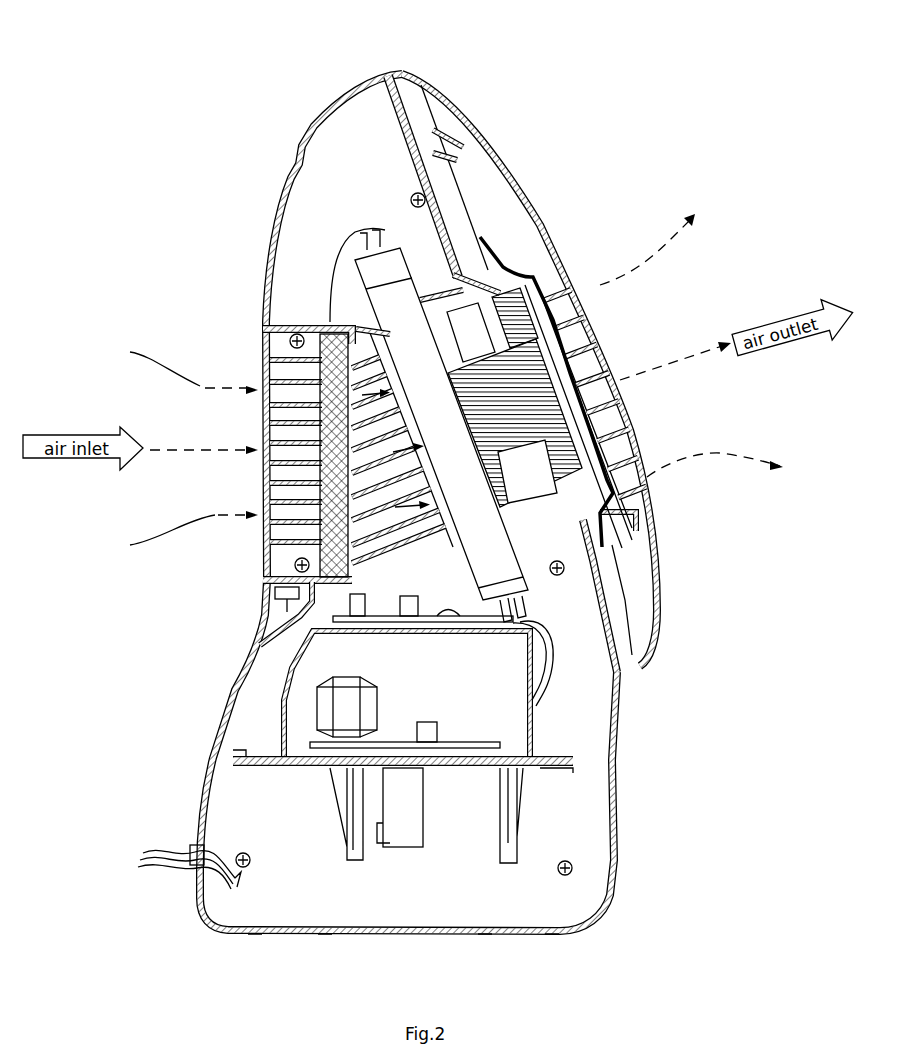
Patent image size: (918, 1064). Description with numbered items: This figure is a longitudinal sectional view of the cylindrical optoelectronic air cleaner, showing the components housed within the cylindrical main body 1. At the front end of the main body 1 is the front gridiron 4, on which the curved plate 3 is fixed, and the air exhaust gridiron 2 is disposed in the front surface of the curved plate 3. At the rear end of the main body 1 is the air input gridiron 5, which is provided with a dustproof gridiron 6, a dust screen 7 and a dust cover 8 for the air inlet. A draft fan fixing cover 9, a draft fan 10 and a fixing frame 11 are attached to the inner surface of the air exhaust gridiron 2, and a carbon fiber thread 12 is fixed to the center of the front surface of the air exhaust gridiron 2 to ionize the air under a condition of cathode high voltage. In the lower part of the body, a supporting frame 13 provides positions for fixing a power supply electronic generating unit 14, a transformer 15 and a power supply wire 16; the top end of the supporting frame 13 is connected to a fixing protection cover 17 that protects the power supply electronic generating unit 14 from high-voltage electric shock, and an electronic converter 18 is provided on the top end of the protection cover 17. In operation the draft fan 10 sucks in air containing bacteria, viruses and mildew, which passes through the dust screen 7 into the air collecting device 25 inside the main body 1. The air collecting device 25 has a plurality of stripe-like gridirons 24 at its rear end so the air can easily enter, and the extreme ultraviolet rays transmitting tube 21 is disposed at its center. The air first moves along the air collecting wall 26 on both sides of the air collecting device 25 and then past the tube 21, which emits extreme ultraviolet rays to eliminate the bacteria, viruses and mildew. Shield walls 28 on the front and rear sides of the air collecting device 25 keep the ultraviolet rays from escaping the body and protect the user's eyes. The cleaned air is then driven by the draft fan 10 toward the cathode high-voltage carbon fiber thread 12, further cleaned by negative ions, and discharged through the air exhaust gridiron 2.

The main body 1 is at (617, 787).
The air exhaust gridiron 2 is at (598, 372).
The curved plate 3 is at (653, 607).
The front gridiron 4 is at (603, 563).
The air input gridiron 5 is at (300, 590).
The dustproof gridiron 6 is at (345, 582).
The dust screen 7 is at (310, 490).
The dust cover 8 is at (290, 352).
The draft fan fixing cover 9 is at (530, 325).
The draft fan 10 is at (547, 395).
The fixing frame 11 is at (440, 230).
The carbon fiber thread 12 is at (497, 265).
The supporting frame 13 is at (397, 795).
The power supply electronic generating unit 14 is at (435, 716).
The transformer 15 is at (420, 733).
The power supply wire 16 is at (183, 857).
The fixing protection cover 17 is at (528, 722).
The electronic converter 18 is at (528, 640).
The extreme ultraviolet rays transmitting tube 21 is at (382, 270).
The stripe-like gridirons 24 is at (330, 440).
The air collecting device 25 is at (350, 330).
The air collecting wall 26 is at (638, 525).
The shield walls 28 is at (522, 268).